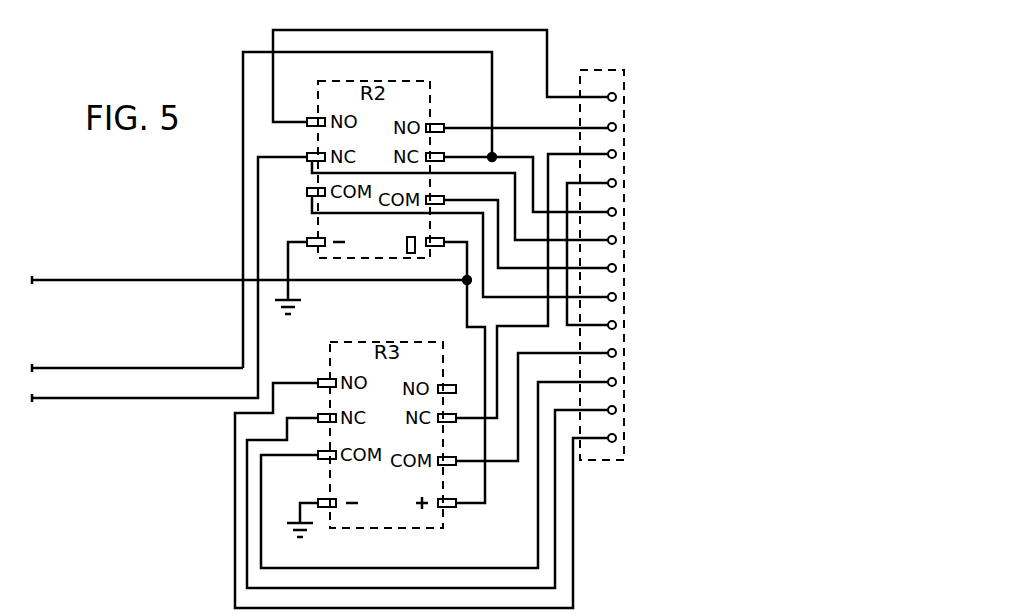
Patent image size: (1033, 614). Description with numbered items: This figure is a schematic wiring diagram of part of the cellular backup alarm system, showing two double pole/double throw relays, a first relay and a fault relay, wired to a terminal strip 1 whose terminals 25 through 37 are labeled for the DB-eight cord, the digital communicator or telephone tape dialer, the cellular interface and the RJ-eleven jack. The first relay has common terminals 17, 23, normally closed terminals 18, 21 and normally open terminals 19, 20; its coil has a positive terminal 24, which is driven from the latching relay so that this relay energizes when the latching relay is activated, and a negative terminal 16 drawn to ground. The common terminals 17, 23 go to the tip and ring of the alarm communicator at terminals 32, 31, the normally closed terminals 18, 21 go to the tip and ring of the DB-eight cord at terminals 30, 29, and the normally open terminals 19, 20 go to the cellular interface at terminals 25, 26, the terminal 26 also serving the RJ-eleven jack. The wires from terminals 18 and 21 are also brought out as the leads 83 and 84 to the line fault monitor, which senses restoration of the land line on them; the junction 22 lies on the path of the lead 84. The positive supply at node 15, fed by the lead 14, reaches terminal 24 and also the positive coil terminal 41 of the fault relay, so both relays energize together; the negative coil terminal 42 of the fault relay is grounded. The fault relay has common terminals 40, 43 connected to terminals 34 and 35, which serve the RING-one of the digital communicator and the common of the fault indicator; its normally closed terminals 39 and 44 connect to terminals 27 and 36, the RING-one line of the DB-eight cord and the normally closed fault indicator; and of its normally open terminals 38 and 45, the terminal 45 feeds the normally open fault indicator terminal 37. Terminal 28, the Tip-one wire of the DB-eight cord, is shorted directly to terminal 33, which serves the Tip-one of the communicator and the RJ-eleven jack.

The terminal strip 1 is at (633, 239).
The power supply connection 14 is at (249, 269).
The power node 15 is at (456, 266).
The relay R2 coil negative terminal 16 is at (310, 267).
The common terminal of relay R2 17 is at (445, 234).
The normally closed terminal of relay R2 18 is at (320, 266).
The normally open terminal of relay R2 19 is at (440, 78).
The normally open terminal of relay R2 20 is at (517, 117).
The normally closed terminal of relay R2 21 is at (517, 172).
The junction node 22 is at (385, 210).
The common terminal of relay R2 23 is at (517, 221).
The positive coil terminal of relay R2 24 is at (455, 360).
The terminal of terminal strip 25 is at (679, 93).
The terminal of terminal strip 26 is at (718, 122).
The terminal of terminal strip 27 is at (707, 150).
The terminal of terminal strip 28 is at (688, 243).
The terminal of terminal strip 29 is at (701, 208).
The terminal of terminal strip 30 is at (694, 236).
The terminal of terminal strip 31 is at (730, 264).
The terminal of terminal strip 32 is at (723, 293).
The terminal of terminal strip 33 is at (743, 321).
The terminal of terminal strip 34 is at (728, 349).
The terminal of terminal strip 35 is at (726, 378).
The terminal of terminal strip 36 is at (696, 406).
The terminal of terminal strip 37 is at (697, 434).
The normally open terminal of relay R3 38 is at (459, 386).
The normally closed terminal of relay R3 39 is at (523, 288).
The common terminal of relay R3 40 is at (523, 409).
The positive coil terminal of relay R3 41 is at (449, 493).
The relay R3 coil negative terminal 42 is at (322, 508).
The common terminal of relay R3 43 is at (434, 475).
The normally closed terminal of relay R3 44 is at (427, 491).
The normally open terminal of relay R3 45 is at (421, 482).
The tip terminal of line fault monitor 83 is at (61, 387).
The ring terminal of line fault monitor 84 is at (137, 357).